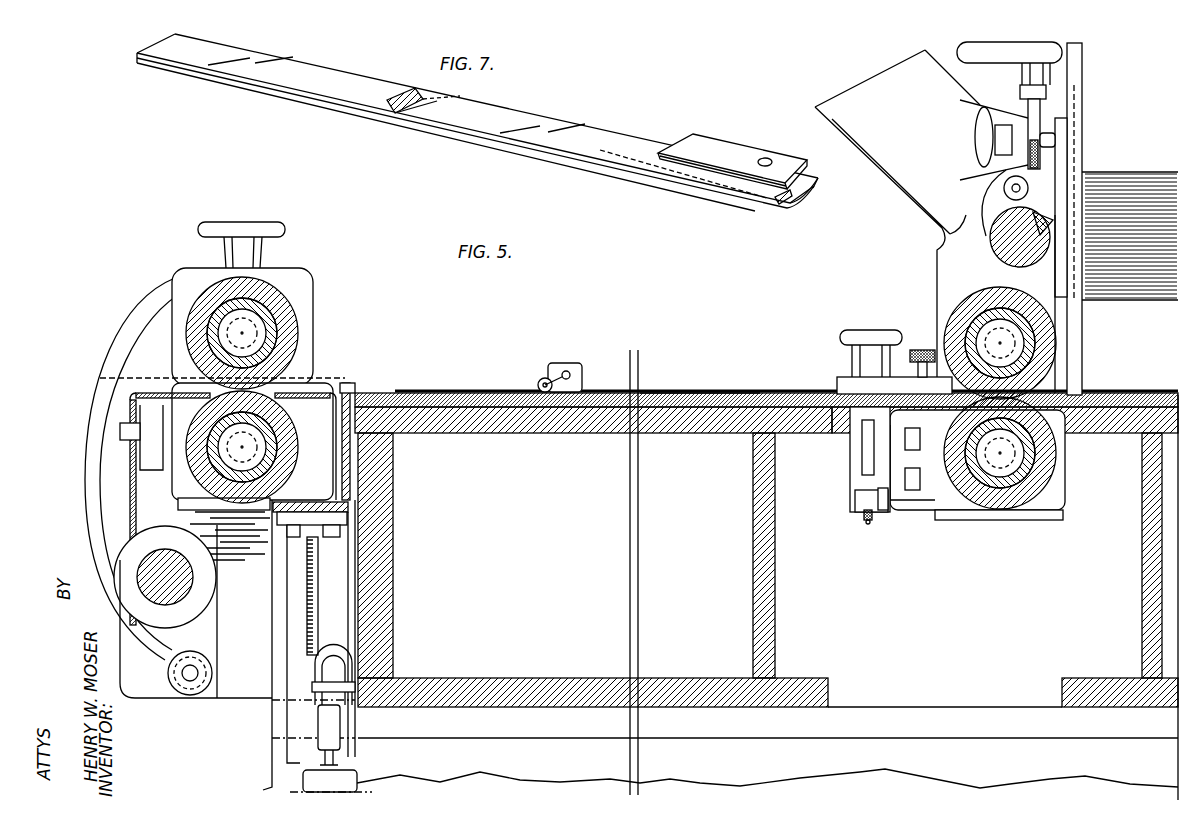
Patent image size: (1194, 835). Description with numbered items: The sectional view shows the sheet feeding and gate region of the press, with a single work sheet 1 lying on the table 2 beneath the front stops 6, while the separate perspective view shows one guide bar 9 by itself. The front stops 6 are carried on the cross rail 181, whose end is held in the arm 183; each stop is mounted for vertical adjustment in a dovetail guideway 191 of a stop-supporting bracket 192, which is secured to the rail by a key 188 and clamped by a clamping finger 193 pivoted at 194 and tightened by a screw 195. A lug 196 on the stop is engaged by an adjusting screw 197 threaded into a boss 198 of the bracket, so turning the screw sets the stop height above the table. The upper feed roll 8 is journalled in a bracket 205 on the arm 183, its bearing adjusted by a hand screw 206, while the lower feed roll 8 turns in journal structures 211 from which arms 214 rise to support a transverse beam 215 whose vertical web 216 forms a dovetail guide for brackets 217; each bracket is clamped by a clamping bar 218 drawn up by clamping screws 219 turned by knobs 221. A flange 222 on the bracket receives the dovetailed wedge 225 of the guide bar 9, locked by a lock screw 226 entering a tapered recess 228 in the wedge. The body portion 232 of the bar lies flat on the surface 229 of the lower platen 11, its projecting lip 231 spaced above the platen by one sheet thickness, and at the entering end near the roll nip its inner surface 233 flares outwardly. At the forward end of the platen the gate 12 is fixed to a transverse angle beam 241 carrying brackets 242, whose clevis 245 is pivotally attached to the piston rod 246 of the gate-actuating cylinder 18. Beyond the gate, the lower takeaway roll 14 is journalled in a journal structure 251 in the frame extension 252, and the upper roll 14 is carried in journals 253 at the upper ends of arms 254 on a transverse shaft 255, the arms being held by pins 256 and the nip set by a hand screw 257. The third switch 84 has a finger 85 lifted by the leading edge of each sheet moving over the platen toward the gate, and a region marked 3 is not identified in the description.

In FIG. 5, the work sheet 1 is at (381, 392).
In FIG. 5, the table 2 is at (1143, 546).
In FIG. 5, the floor support 3 is at (1160, 231).
In FIG. 5, the front stop 6 is at (1082, 100).
In FIG. 5, the feed roll 8 is at (960, 304).
In FIG. 7, the guide bar 9 is at (556, 126).
In FIG. 5, the guide bar 9 is at (458, 390).
In FIG. 5, the platen 11 is at (598, 430).
In FIG. 5, the gate 12 is at (346, 388).
In FIG. 5, the takeaway roll 14 is at (200, 300).
In FIG. 5, the gate-actuating cylinder 18 is at (353, 778).
In FIG. 5, the third switch 84 is at (571, 363).
In FIG. 5, the finger 85 is at (543, 379).
In FIG. 5, the cross rail 181 is at (992, 244).
In FIG. 5, the arm 183 is at (850, 95).
In FIG. 5, the key 188 is at (1050, 224).
In FIG. 5, the dovetail guideway 191 is at (1056, 141).
In FIG. 5, the stop-supporting bracket 192 is at (1067, 170).
In FIG. 5, the clamping finger 193 is at (986, 203).
In FIG. 5, the pivot 194 is at (1005, 186).
In FIG. 5, the screw 195 is at (977, 142).
In FIG. 5, the lug 196 is at (1044, 92).
In FIG. 5, the adjusting screw 197 is at (1052, 56).
In FIG. 5, the boss 198 is at (994, 132).
In FIG. 5, the bracket 205 is at (946, 272).
In FIG. 5, the hand screw 206 is at (930, 54).
In FIG. 5, the journal structure 211 is at (1060, 484).
In FIG. 5, the arm 214 is at (925, 512).
In FIG. 5, the transverse beam 215 is at (883, 513).
In FIG. 5, the vertical web 216 is at (888, 455).
In FIG. 5, the bracket 217 is at (855, 446).
In FIG. 5, the clamping bar 218 is at (860, 501).
In FIG. 5, the clamping screw 219 is at (866, 523).
In FIG. 5, the knob 221 is at (872, 330).
In FIG. 5, the flange 222 is at (842, 384).
In FIG. 7, the dovetailed wedge 225 is at (695, 146).
In FIG. 5, the lock screw 226 is at (922, 350).
In FIG. 7, the tapered recess 228 is at (766, 157).
In FIG. 5, the surface 229 is at (706, 393).
In FIG. 7, the projecting lip 231 is at (420, 128).
In FIG. 7, the body portion 232 is at (430, 96).
In FIG. 7, the inner surface 233 is at (782, 205).
In FIG. 5, the transverse angle beam 241 is at (350, 493).
In FIG. 5, the bracket 242 is at (310, 573).
In FIG. 5, the clevis 245 is at (346, 662).
In FIG. 5, the piston rod 246 is at (331, 723).
In FIG. 5, the journal structure 251 is at (205, 494).
In FIG. 5, the frame extension 252 is at (250, 699).
In FIG. 5, the journal 253 is at (312, 306).
In FIG. 5, the arm 254 is at (126, 350).
In FIG. 5, the transverse shaft 255 is at (188, 581).
In FIG. 5, the pin 256 is at (213, 672).
In FIG. 5, the hand screw 257 is at (246, 222).